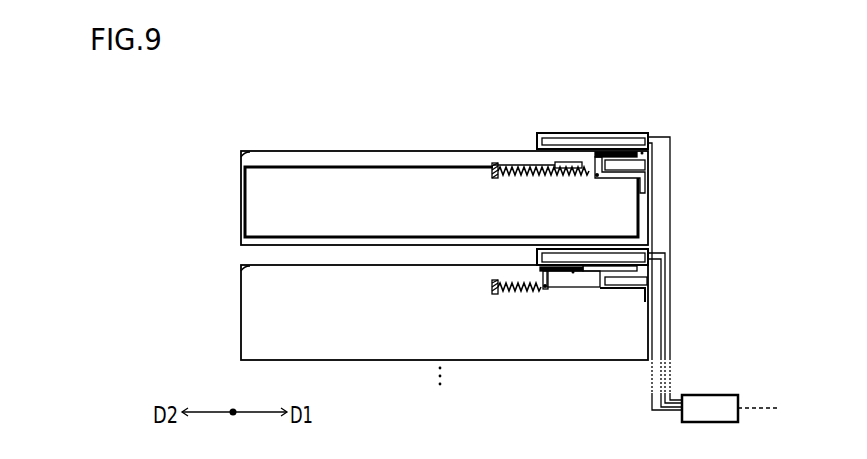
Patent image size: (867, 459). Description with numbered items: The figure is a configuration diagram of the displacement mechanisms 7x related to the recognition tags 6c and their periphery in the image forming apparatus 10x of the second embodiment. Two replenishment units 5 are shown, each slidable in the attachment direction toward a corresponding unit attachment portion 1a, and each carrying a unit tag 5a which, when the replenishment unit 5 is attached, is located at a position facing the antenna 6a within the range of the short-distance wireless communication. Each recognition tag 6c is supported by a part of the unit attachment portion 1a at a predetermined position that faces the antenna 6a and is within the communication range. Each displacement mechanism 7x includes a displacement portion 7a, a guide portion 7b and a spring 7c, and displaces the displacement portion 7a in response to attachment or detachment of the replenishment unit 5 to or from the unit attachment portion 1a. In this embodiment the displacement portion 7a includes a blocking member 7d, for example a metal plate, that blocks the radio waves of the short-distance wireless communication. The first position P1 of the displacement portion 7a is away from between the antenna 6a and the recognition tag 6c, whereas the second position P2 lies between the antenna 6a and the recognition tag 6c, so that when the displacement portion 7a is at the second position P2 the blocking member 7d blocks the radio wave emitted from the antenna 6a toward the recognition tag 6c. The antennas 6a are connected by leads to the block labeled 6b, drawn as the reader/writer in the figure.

The image forming apparatus 10x is at (152, 128).
The unit attachment portion 1a is at (241, 153).
The replenishment unit 5 is at (354, 166).
The unit tag 5a is at (555, 165).
The displacement portion 7a is at (555, 162).
The spring 7c is at (550, 175).
The blocking member 7d is at (640, 151).
The antenna 6a is at (643, 134).
The recognition tag 6c is at (645, 158).
The displacement mechanism 7x is at (600, 182).
The guide portion 7b is at (593, 288).
The second position P2 is at (643, 153).
The first position P1 is at (573, 272).
The reader/writer 6b is at (708, 395).